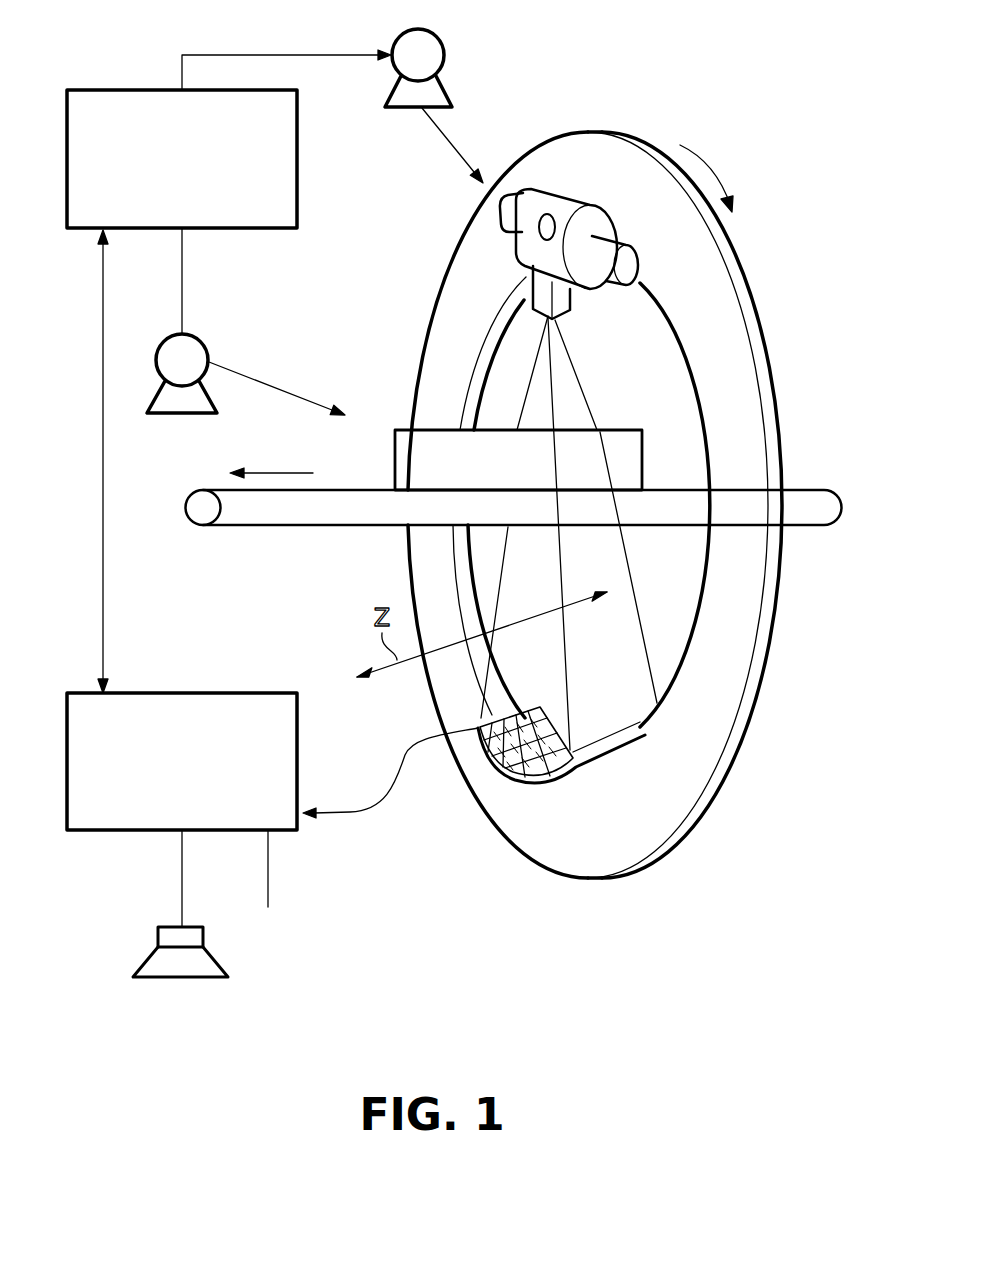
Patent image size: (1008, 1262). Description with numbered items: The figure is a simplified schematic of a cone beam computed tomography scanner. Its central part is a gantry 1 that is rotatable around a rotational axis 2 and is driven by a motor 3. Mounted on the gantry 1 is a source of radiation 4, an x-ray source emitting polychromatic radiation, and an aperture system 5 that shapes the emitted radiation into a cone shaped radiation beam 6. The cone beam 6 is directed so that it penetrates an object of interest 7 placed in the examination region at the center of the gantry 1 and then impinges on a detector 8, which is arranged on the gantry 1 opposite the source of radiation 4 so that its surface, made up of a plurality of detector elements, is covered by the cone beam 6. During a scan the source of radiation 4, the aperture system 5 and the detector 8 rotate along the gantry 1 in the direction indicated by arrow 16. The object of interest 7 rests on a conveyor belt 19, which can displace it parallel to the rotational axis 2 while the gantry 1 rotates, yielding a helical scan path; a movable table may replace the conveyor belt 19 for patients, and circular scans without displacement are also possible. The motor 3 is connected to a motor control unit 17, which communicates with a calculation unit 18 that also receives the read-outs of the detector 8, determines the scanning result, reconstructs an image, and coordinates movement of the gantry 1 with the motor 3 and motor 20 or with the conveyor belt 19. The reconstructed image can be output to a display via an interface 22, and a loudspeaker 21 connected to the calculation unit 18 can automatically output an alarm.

The gantry 1 is at (737, 638).
The rotational axis 2 is at (283, 472).
The motor 3 is at (447, 57).
The source of radiation 4 is at (572, 200).
The aperture system 5 is at (536, 280).
The cone shaped radiation beam 6 is at (592, 398).
The object of interest 7 is at (393, 450).
The detector 8 is at (528, 780).
The arrow 16 is at (705, 170).
The motor control unit 17 is at (123, 90).
The calculation unit 18 is at (210, 693).
The conveyor belt 19 is at (803, 493).
The motor 20 is at (207, 346).
The loudspeaker 21 is at (182, 982).
The interface 22 is at (268, 880).